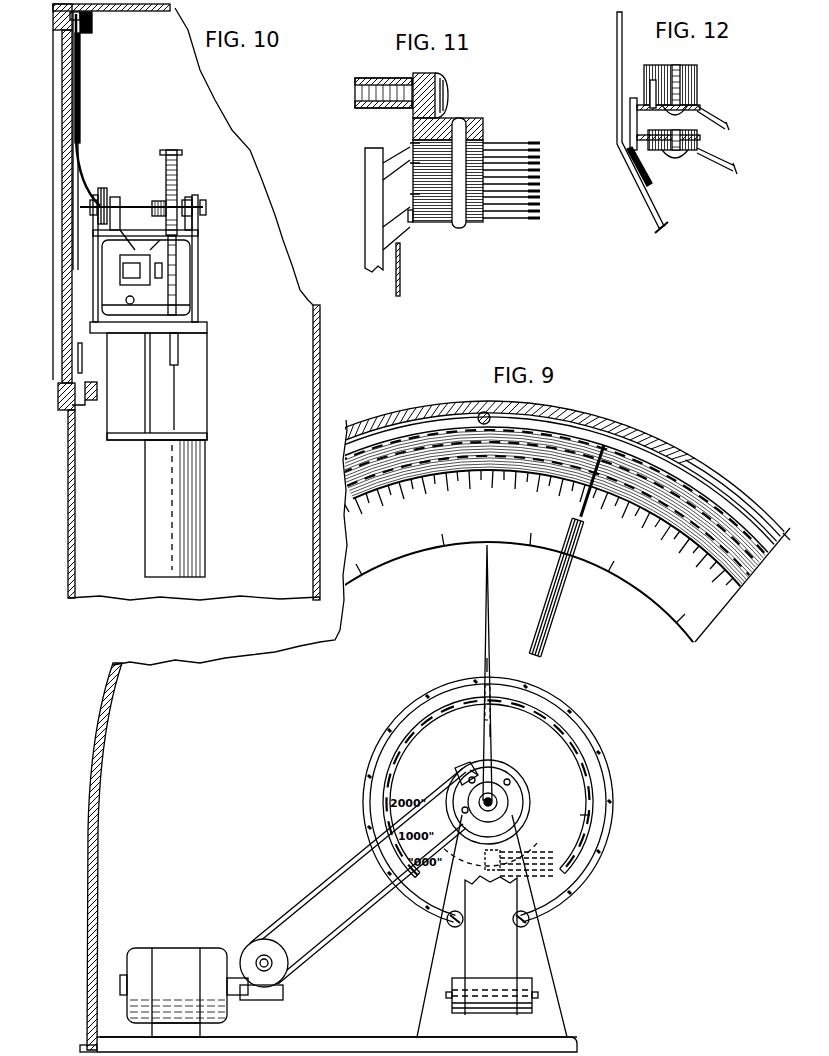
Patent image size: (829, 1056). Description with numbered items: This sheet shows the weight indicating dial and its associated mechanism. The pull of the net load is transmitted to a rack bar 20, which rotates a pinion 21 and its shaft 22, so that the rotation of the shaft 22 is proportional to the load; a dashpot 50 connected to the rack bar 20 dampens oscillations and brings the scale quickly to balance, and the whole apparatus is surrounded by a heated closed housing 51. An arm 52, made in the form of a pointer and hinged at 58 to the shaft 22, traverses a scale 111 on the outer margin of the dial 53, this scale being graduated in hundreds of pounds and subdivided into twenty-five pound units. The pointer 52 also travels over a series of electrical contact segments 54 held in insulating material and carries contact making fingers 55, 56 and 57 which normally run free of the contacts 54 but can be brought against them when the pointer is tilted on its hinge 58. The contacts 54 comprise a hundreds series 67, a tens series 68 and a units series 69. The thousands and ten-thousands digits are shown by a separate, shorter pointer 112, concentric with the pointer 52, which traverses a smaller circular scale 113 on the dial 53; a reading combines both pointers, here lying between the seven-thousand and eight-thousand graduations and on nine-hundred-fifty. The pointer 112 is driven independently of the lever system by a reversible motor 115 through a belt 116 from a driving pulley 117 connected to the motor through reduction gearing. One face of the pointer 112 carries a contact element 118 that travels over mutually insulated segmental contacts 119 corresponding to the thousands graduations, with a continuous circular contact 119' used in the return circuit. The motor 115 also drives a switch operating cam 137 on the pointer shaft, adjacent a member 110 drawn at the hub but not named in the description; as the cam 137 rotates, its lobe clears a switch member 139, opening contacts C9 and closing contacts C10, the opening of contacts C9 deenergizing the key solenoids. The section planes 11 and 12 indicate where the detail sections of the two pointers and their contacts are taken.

In FIG. 9, the section plane 11 is at (603, 438).
In FIG. 9, the section plane 12 is at (488, 665).
In FIG. 10, the rack bar 20 is at (178, 175).
In FIG. 10, the pinion 21 is at (165, 197).
In FIG. 10, the shaft 22 is at (105, 200).
In FIG. 9, the shaft 22 is at (492, 800).
In FIG. 10, the dashpot 50 is at (195, 476).
In FIG. 10, the closed housing 51 is at (70, 470).
In FIG. 10, the arm 52 is at (73, 50).
In FIG. 11, the arm 52 is at (368, 162).
In FIG. 9, the arm 52 is at (535, 432).
In FIG. 10, the dial 53 is at (80, 62).
In FIG. 11, the dial 53 is at (403, 280).
In FIG. 9, the dial 53 is at (732, 595).
In FIG. 11, the electrical contact segments 54 is at (412, 216).
In FIG. 11, the contact making finger 55 is at (410, 143).
In FIG. 11, the contact making finger 56 is at (410, 165).
In FIG. 11, the contact making finger 57 is at (410, 198).
In FIG. 10, the hinge 58 is at (78, 207).
In FIG. 11, the hundreds contact series 67 is at (485, 142).
In FIG. 9, the hundreds contact series 67 is at (580, 447).
In FIG. 11, the tens contact series 68 is at (470, 148).
In FIG. 9, the tens contact series 68 is at (398, 436).
In FIG. 11, the units contact series 69 is at (442, 140).
In FIG. 9, the units contact series 69 is at (457, 440).
In FIG. 9, the lever 110 is at (460, 783).
In FIG. 9, the scale 111 is at (720, 498).
In FIG. 10, the pointer 112 is at (80, 100).
In FIG. 12, the pointer 112 is at (660, 205).
In FIG. 9, the pointer 112 is at (483, 636).
In FIG. 9, the circular scale 113 is at (633, 572).
In FIG. 9, the reversible motor 115 is at (213, 958).
In FIG. 9, the belt 116 is at (344, 870).
In FIG. 9, the driving pulley 117 is at (285, 957).
In FIG. 12, the contact element 118 is at (635, 127).
In FIG. 9, the contact element 118 is at (452, 695).
In FIG. 12, the segmental contacts 119 is at (651, 97).
In FIG. 9, the segmental contacts 119 is at (456, 787).
In FIG. 12, the continuous circular contact 119' is at (712, 152).
In FIG. 9, the continuous circular contact 119' is at (566, 812).
In FIG. 9, the switch operating cam 137 is at (468, 766).
In FIG. 9, the switch member 139 is at (468, 848).
In FIG. 9, the contacts C9 is at (490, 868).
In FIG. 9, the contacts C10 is at (510, 848).